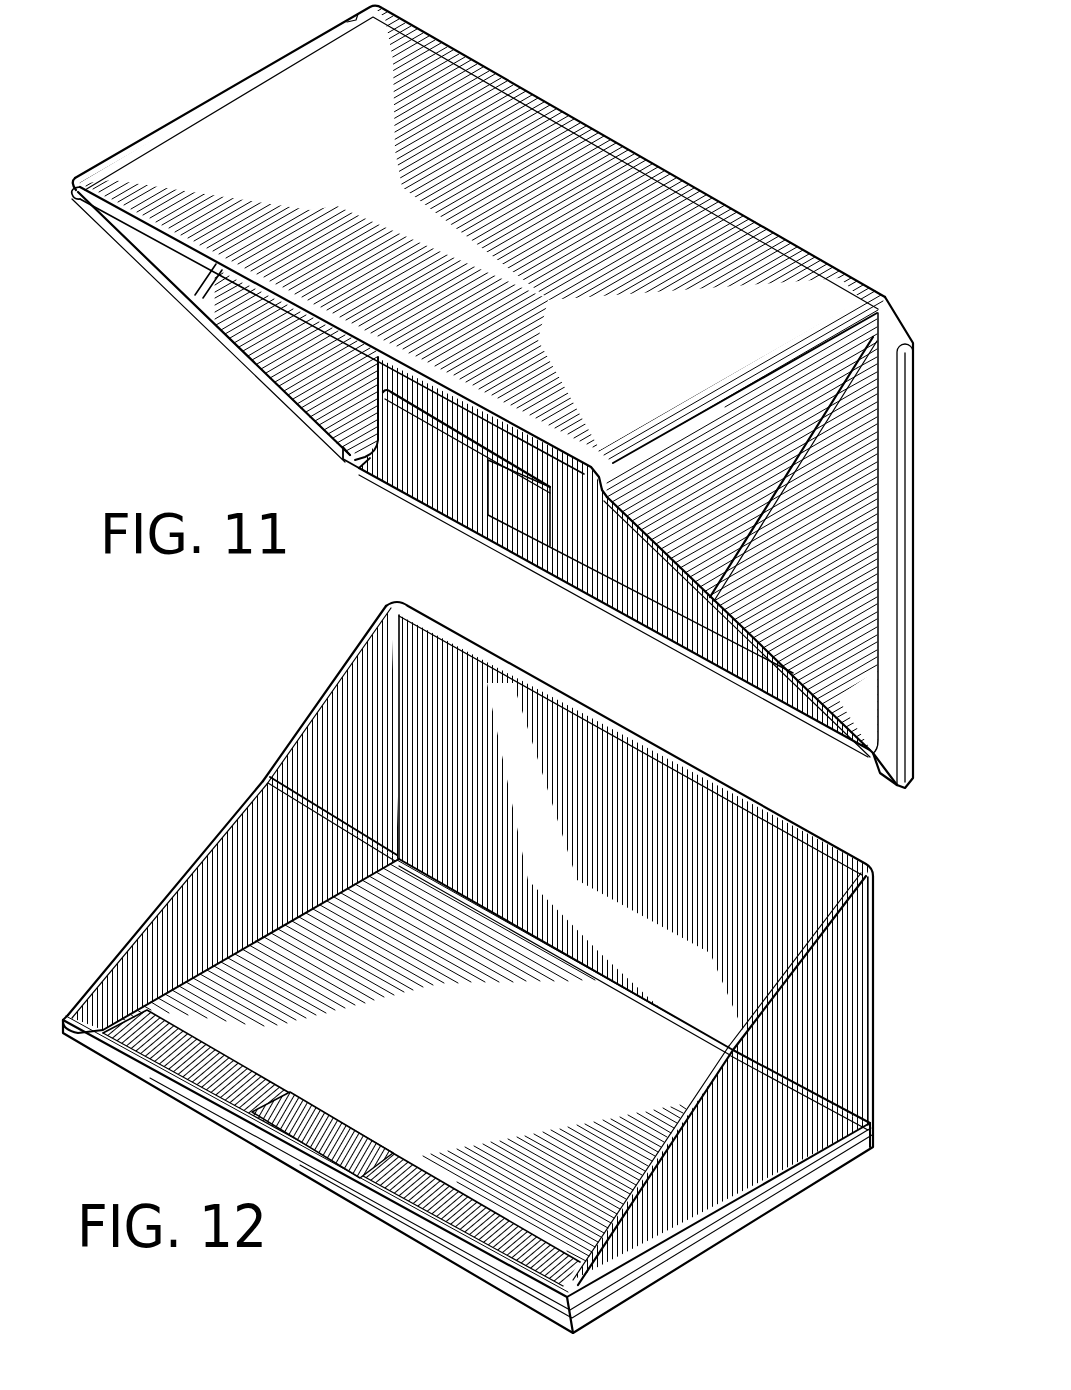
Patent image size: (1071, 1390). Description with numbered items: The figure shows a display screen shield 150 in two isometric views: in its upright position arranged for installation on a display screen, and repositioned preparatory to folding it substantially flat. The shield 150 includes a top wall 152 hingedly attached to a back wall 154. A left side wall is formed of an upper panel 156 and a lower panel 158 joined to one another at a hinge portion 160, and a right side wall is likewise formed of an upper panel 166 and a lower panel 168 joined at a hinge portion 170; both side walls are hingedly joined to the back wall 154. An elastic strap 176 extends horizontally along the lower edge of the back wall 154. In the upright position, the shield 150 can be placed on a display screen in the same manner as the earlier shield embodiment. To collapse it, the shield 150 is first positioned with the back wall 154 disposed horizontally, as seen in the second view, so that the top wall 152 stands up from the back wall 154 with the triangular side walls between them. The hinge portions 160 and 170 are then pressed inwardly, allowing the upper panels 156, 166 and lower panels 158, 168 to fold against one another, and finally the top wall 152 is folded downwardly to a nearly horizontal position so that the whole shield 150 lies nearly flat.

In FIG. 11, the display screen shield 150 is at (686, 86).
In FIG. 12, the display screen shield 150 is at (216, 718).
In FIG. 11, the top wall 152 is at (507, 157).
In FIG. 12, the top wall 152 is at (500, 713).
In FIG. 11, the back wall 154 is at (403, 473).
In FIG. 12, the back wall 154 is at (473, 1123).
In FIG. 11, the upper panel of left side wall 156 is at (170, 253).
In FIG. 12, the upper panel of left side wall 156 is at (348, 710).
In FIG. 11, the lower panel of left side wall 158 is at (283, 353).
In FIG. 12, the lower panel of left side wall 158 is at (230, 900).
In FIG. 11, the hinge portion 160 is at (213, 277).
In FIG. 12, the hinge portion 160 is at (308, 803).
In FIG. 11, the upper panel of right side wall 166 is at (737, 440).
In FIG. 12, the upper panel of right side wall 166 is at (843, 987).
In FIG. 11, the lower panel of right side wall 168 is at (820, 610).
In FIG. 12, the lower panel of right side wall 168 is at (710, 1190).
In FIG. 11, the hinge portion 170 is at (823, 407).
In FIG. 12, the hinge portion 170 is at (820, 1100).
In FIG. 11, the elastic strap 176 is at (442, 468).
In FIG. 12, the elastic strap 176 is at (483, 1233).